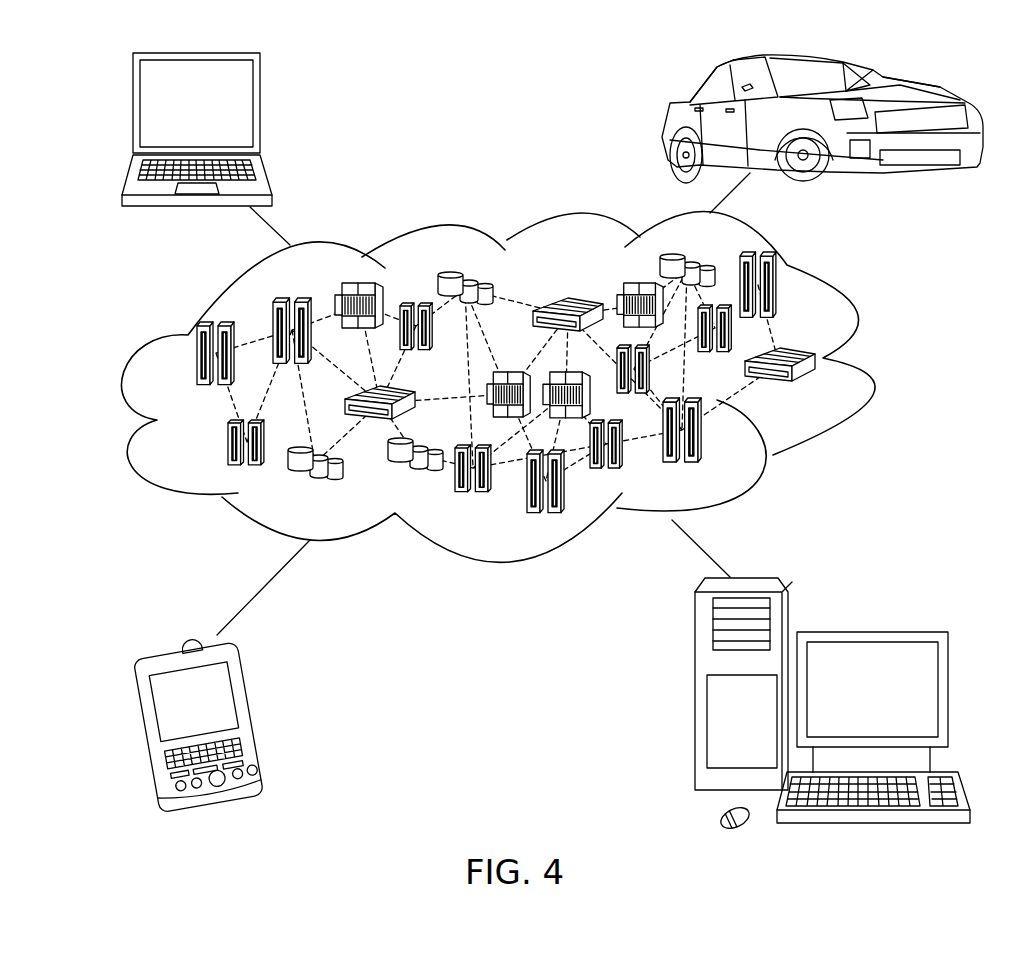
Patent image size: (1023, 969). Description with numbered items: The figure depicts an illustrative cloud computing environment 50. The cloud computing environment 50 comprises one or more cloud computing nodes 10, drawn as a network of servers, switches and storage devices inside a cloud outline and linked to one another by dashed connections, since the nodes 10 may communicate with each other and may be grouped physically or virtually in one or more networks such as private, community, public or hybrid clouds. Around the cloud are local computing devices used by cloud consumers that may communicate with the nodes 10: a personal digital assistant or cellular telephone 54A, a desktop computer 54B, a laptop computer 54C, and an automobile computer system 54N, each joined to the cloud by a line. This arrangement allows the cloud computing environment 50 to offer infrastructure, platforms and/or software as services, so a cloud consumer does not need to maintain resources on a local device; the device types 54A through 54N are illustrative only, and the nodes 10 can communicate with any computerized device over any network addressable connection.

The cloud computing environment 50 is at (868, 366).
The cloud computing node 10 is at (819, 391).
The personal digital assistant or cellular telephone 54A is at (253, 718).
The desktop computer 54B is at (870, 632).
The laptop computer 54C is at (260, 110).
The automobile computer system 54N is at (664, 126).